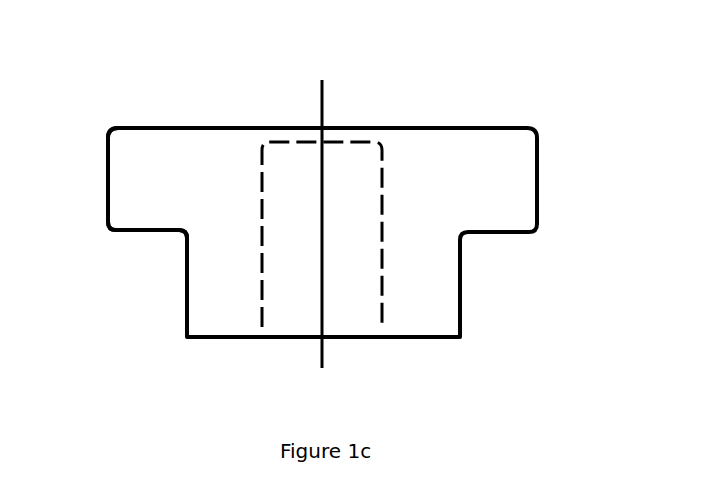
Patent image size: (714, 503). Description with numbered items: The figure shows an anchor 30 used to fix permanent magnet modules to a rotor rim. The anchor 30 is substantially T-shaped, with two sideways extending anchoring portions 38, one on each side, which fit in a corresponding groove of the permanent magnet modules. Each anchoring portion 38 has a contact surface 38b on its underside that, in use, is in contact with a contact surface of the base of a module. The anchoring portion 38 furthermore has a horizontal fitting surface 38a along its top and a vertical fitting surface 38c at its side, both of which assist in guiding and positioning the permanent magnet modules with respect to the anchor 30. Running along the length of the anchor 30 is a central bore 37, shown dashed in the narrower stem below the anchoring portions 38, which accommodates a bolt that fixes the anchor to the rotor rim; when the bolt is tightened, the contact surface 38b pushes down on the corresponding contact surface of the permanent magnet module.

The anchor 30 is at (228, 160).
The central bore 37 is at (350, 293).
The anchoring portion 38 is at (498, 184).
The horizontal fitting surface 38a is at (137, 128).
The contact surface 38b is at (148, 233).
The vertical fitting surface 38c is at (107, 180).